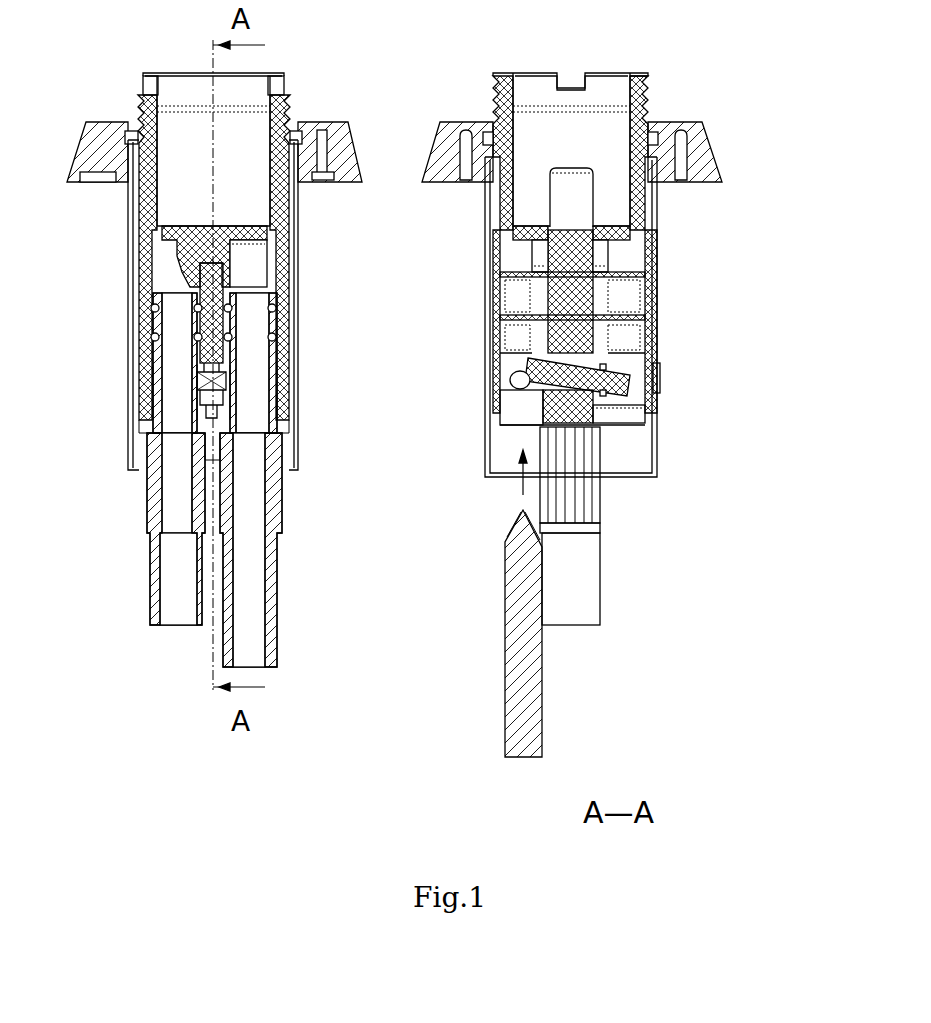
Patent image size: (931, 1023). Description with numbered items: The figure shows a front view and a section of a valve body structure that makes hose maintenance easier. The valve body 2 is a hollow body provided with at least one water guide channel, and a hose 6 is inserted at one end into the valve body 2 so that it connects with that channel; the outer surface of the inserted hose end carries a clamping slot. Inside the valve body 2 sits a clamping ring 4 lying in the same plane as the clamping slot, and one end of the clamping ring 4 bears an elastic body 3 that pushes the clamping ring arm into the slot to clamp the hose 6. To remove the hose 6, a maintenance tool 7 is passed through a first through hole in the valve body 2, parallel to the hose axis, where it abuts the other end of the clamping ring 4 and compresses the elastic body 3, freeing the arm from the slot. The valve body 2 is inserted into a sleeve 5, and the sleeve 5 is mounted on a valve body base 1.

The valve body base 1 is at (465, 120).
The valve body 2 is at (647, 117).
The elastic body 3 is at (653, 340).
The clamping ring 4 is at (522, 368).
The sleeve 5 is at (650, 447).
The hose 6 is at (568, 570).
The maintenance tool 7 is at (530, 690).